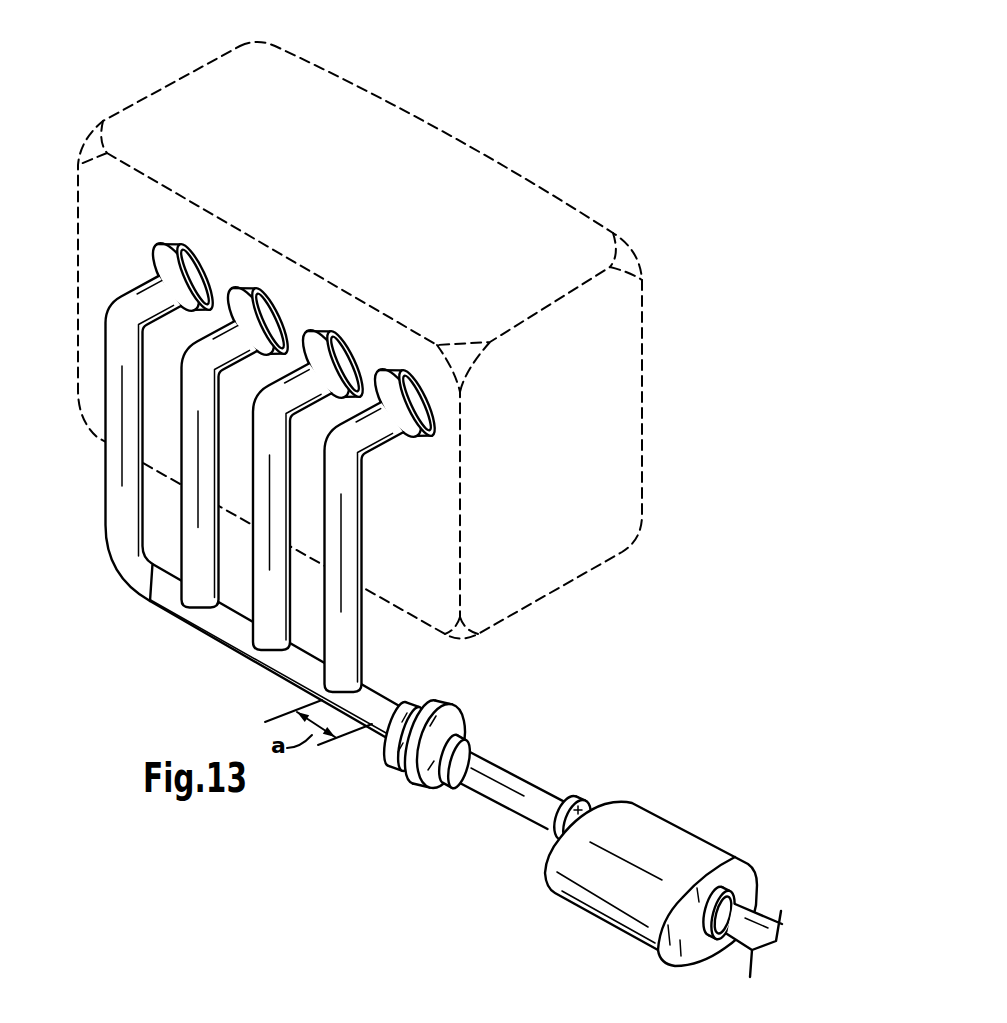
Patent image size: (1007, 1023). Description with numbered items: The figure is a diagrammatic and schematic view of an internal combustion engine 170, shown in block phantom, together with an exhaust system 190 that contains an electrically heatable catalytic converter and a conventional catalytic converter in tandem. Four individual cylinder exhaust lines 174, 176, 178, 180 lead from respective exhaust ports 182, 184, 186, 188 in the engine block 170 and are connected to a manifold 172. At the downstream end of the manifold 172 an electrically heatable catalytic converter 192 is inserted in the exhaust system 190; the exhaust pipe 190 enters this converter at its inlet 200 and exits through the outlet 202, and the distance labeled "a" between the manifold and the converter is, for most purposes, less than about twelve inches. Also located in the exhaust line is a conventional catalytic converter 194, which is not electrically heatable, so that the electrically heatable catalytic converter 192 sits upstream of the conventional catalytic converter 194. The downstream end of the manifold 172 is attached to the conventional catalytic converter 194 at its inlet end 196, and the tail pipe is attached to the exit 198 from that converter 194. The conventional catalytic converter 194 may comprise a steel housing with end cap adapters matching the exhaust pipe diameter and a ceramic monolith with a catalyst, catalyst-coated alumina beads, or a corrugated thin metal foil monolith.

The internal combustion engine 170 is at (516, 128).
The manifold 172 is at (372, 703).
The individual cylinder exhaust line 174 is at (340, 633).
The individual cylinder exhaust line 176 is at (267, 590).
The individual cylinder exhaust line 178 is at (193, 543).
The individual cylinder exhaust line 180 is at (120, 498).
The exhaust port 182 is at (423, 387).
The exhaust port 184 is at (340, 343).
The exhaust port 186 is at (267, 317).
The exhaust port 188 is at (198, 260).
The exhaust system 190 is at (492, 828).
The electrically heatable catalytic converter 192 is at (430, 713).
The conventional catalytic converter 194 is at (660, 848).
The inlet end 196 is at (580, 817).
The exit 198 is at (733, 900).
The inlet 200 is at (390, 745).
The outlet 202 is at (460, 738).